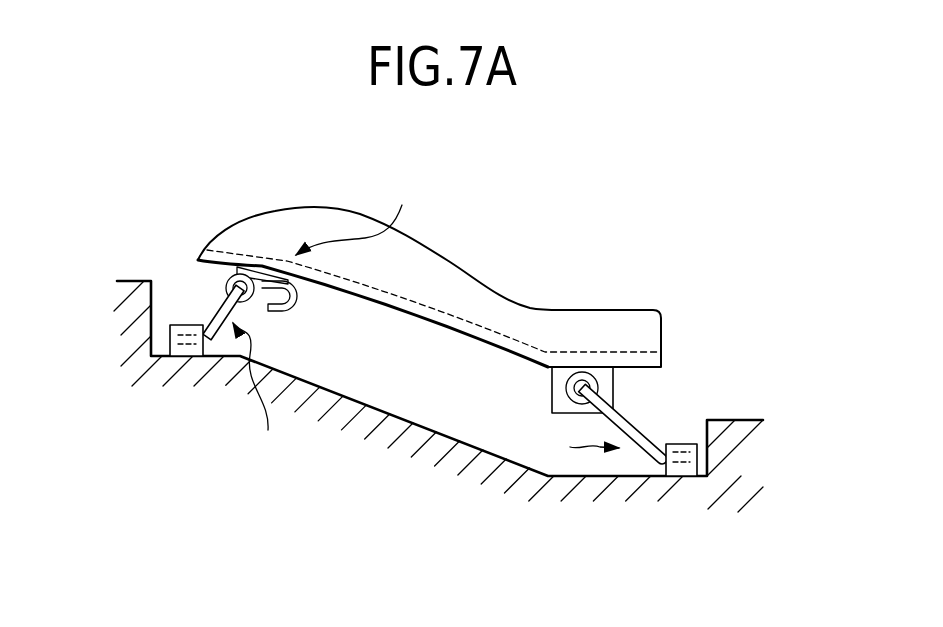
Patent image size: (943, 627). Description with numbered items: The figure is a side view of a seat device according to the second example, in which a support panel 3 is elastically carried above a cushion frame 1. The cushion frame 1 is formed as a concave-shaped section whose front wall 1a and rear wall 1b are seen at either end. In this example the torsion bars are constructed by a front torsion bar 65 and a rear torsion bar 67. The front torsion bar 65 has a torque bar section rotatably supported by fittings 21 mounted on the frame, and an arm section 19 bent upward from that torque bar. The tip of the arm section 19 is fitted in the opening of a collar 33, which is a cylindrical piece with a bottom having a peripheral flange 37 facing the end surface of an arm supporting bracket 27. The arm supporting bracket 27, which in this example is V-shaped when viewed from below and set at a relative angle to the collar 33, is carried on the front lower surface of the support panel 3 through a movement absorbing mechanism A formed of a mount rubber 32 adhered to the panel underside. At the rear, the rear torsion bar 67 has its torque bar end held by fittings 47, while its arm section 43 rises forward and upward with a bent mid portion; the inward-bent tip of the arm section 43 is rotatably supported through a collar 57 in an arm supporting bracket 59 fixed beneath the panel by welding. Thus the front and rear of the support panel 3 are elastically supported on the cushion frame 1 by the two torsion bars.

The cushion frame 1 is at (740, 421).
The front wall 1a is at (132, 341).
The rear wall 1b is at (756, 449).
The support panel 3 is at (342, 207).
The mount rubber 32 is at (258, 272).
The collar 33 is at (226, 276).
The peripheral flange 37 is at (228, 290).
The arm supporting bracket 27 is at (296, 302).
The arm section 19 is at (212, 305).
The fittings for supporting the front torsion bar 21 is at (176, 357).
The front torsion bar 65 is at (259, 394).
The movement absorbing mechanism A is at (359, 210).
The arm supporting bracket 59 is at (551, 383).
The arm section 43 is at (630, 418).
The collar 57 is at (582, 372).
The fittings for supporting the left rear torsion bar 47 is at (693, 478).
The rear torsion bar 67 is at (574, 448).